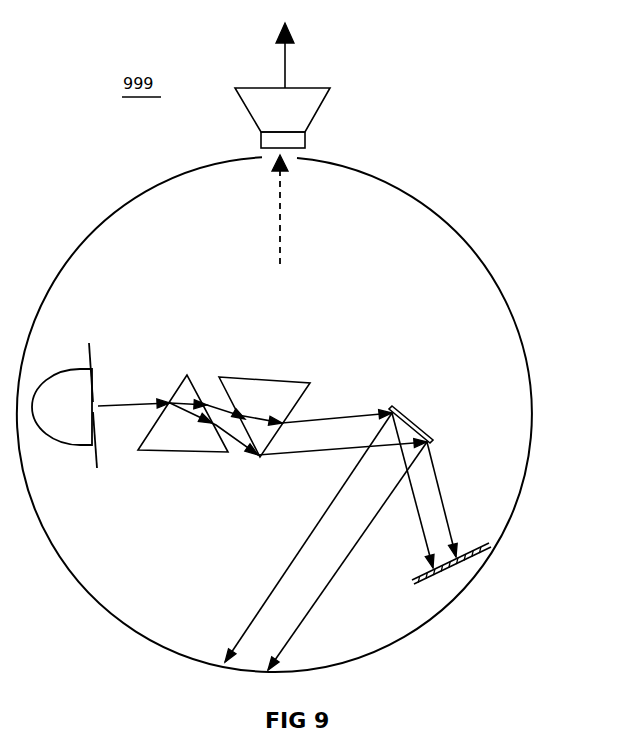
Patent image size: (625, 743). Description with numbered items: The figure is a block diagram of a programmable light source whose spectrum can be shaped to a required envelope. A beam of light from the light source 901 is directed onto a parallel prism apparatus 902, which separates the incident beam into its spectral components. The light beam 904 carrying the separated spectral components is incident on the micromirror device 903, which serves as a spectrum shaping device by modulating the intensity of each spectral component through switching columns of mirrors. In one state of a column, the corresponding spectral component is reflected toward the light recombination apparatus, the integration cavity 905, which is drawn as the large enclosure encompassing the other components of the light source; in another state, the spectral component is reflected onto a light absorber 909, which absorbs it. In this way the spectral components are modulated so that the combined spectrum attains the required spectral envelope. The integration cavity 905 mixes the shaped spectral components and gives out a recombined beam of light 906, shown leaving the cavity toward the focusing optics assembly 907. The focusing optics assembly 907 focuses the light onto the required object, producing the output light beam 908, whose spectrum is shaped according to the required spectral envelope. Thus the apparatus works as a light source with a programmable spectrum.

The light source 901 is at (82, 367).
The parallel prism apparatus 902 is at (185, 435).
The micromirror device 903 is at (409, 422).
The light beams 904 is at (277, 534).
The integration cavity 905 is at (530, 373).
The recombined beam of light 906 is at (295, 211).
The focusing optics assembly 907 is at (292, 118).
The light beam 908 is at (302, 55).
The light absorber 909 is at (463, 569).